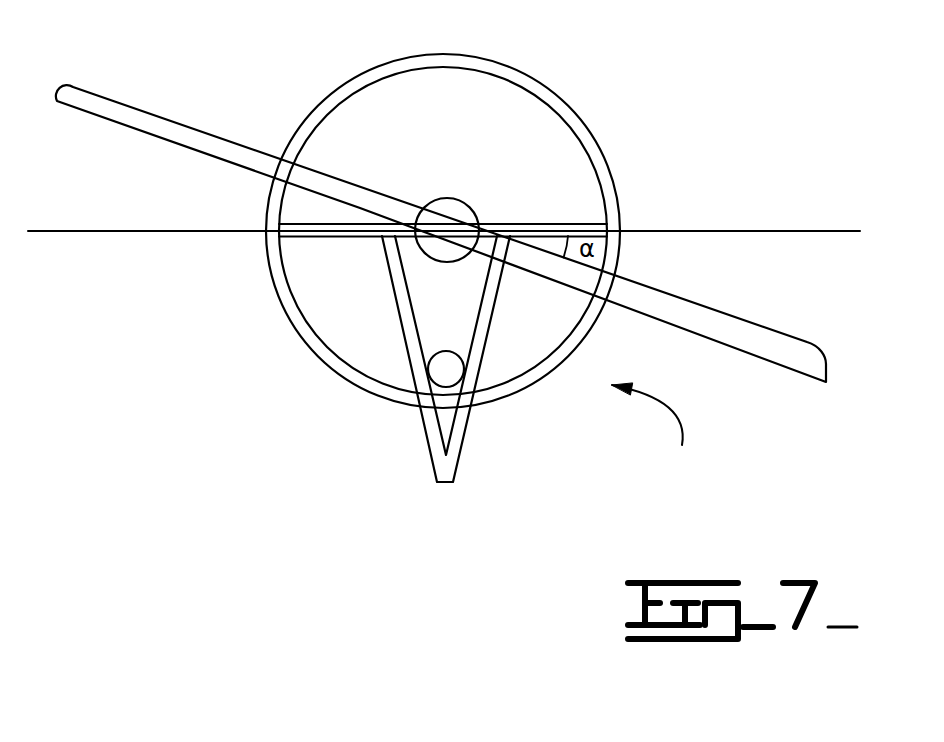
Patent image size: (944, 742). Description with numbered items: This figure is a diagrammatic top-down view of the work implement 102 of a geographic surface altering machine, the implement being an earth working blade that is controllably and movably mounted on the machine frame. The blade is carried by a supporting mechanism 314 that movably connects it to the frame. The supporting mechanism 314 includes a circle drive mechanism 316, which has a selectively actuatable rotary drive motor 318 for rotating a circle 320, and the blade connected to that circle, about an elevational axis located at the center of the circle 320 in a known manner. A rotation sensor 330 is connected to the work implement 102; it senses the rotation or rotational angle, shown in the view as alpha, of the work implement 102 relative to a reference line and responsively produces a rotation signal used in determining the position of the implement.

The work implement 102 is at (103, 105).
The circle 320 is at (585, 122).
The rotation sensor 330 is at (453, 210).
The rotary drive motor 318 is at (443, 369).
The supporting mechanism 314 is at (463, 437).
The circle drive mechanism 316 is at (659, 431).